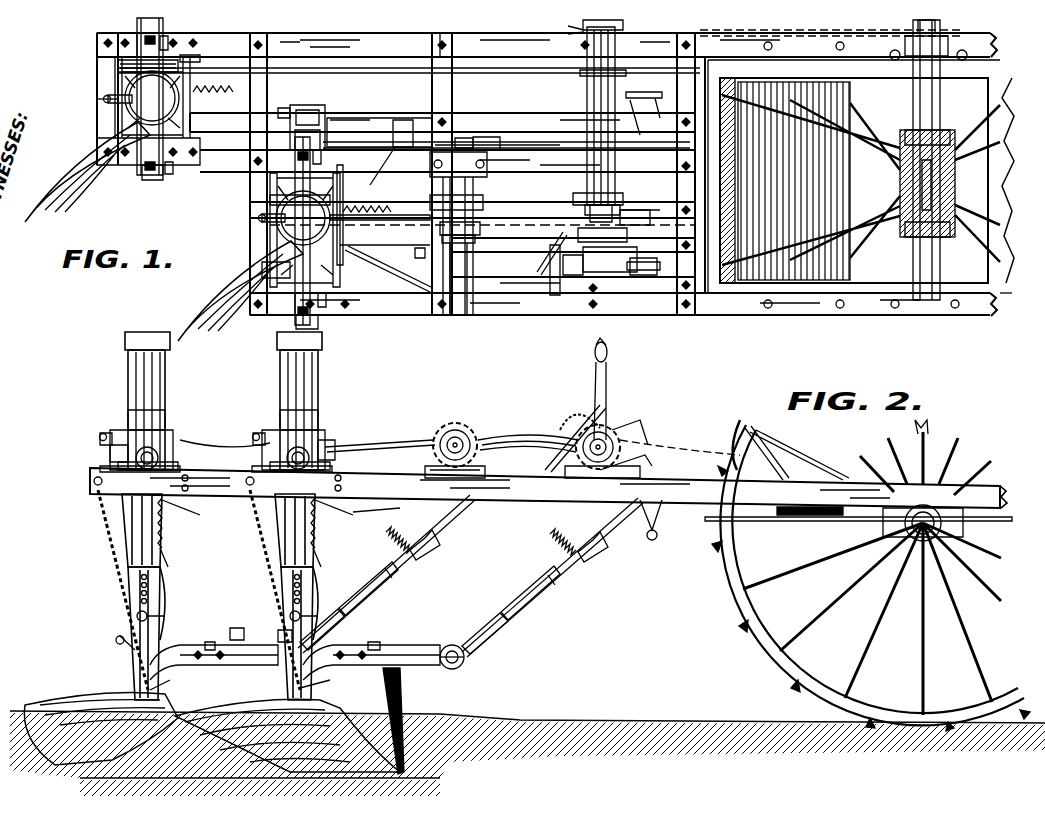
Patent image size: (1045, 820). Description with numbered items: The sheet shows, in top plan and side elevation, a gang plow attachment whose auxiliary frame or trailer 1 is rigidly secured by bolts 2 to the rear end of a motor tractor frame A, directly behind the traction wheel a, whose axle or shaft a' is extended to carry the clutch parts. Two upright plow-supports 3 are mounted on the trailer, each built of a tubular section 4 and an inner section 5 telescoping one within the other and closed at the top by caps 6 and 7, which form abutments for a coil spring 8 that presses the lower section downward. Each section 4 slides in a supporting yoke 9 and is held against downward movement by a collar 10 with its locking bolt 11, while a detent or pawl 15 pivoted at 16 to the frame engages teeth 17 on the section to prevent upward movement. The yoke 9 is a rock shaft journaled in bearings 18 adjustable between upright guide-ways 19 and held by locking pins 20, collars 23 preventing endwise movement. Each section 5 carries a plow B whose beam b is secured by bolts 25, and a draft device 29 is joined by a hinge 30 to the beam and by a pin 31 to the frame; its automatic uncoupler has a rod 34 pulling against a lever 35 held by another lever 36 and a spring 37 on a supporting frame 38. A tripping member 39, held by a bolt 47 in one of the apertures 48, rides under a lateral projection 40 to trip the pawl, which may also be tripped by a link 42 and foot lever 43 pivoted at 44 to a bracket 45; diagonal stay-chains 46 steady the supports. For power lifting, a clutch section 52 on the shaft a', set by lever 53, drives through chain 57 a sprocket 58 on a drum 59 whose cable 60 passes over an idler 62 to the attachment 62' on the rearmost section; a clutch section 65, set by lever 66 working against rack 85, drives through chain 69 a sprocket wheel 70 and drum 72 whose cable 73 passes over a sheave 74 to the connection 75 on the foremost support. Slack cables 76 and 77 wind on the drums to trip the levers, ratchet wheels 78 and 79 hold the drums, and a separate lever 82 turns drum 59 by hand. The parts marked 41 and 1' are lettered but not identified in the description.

In FIG. 1, the auxiliary frame or trailer 1 is at (547, 186).
In FIG. 2, the auxiliary frame or trailer 1 is at (548, 493).
In FIG. 1, the frame rail 1' is at (469, 37).
In FIG. 1, the bolts 2 is at (835, 49).
In FIG. 2, the bolts 2 is at (830, 478).
In FIG. 1, the upright plow-support 3 is at (722, 222).
In FIG. 2, the upright plow-support 3 is at (137, 547).
In FIG. 1, the upper tubular section 4 is at (612, 27).
In FIG. 2, the upper tubular section 4 is at (166, 366).
In FIG. 1, the inner lower section 5 is at (462, 140).
In FIG. 2, the inner lower section 5 is at (135, 650).
In FIG. 1, the cap 6 is at (135, 107).
In FIG. 2, the cap 6 is at (125, 341).
In FIG. 1, the cap 7 is at (945, 35).
In FIG. 1, the coil spring 8 is at (148, 22).
In FIG. 1, the supporting yoke 9 is at (140, 142).
In FIG. 2, the supporting yoke 9 is at (150, 470).
In FIG. 1, the collar 10 is at (125, 85).
In FIG. 2, the collar 10 is at (118, 430).
In FIG. 1, the locking bolt 11 is at (104, 99).
In FIG. 2, the locking bolt 11 is at (102, 436).
In FIG. 1, the detent or pawl 15 is at (227, 158).
In FIG. 2, the detent or pawl 15 is at (185, 506).
In FIG. 1, the pivot 16 is at (190, 55).
In FIG. 2, the pivot 16 is at (187, 482).
In FIG. 2, the teeth 17 is at (164, 542).
In FIG. 1, the bearings 18 is at (145, 38).
In FIG. 2, the bearings 18 is at (160, 452).
In FIG. 1, the upright guide-ways 19 is at (167, 38).
In FIG. 2, the upright guide-ways 19 is at (160, 415).
In FIG. 1, the locking pins 20 is at (118, 42).
In FIG. 2, the locking pins 20 is at (110, 452).
In FIG. 1, the collars 23 is at (160, 180).
In FIG. 2, the collars 23 is at (95, 481).
In FIG. 2, the bolts 25 is at (135, 690).
In FIG. 1, the draft device 29 is at (400, 140).
In FIG. 2, the draft device 29 is at (418, 562).
In FIG. 1, the hinge 30 is at (305, 105).
In FIG. 2, the hinge 30 is at (465, 660).
In FIG. 1, the pin 31 is at (500, 137).
In FIG. 1, the rod 34 is at (468, 138).
In FIG. 2, the rod 34 is at (432, 536).
In FIG. 2, the lever 35 is at (490, 640).
In FIG. 2, the lever 36 is at (365, 606).
In FIG. 2, the spring 37 is at (380, 568).
In FIG. 2, the supporting frame 38 is at (378, 590).
In FIG. 2, the tripping member 39 is at (168, 580).
In FIG. 2, the lateral projection 40 is at (164, 513).
In FIG. 1, the rack 41 is at (210, 92).
In FIG. 1, the link 42 is at (360, 118).
In FIG. 2, the link 42 is at (385, 508).
In FIG. 1, the foot lever 43 is at (636, 112).
In FIG. 2, the foot lever 43 is at (632, 458).
In FIG. 2, the pivot 44 is at (650, 532).
In FIG. 2, the bracket 45 is at (651, 515).
In FIG. 1, the diagonal stay-chains 46 is at (275, 270).
In FIG. 2, the diagonal stay-chains 46 is at (105, 531).
In FIG. 2, the bolt 47 is at (150, 616).
In FIG. 2, the apertures 48 is at (138, 590).
In FIG. 1, the clutch section 52 is at (950, 33).
In FIG. 1, the lever 53 is at (945, 58).
In FIG. 2, the lever 53 is at (930, 450).
In FIG. 1, the chain 57 is at (830, 33).
In FIG. 2, the chain 57 is at (735, 442).
In FIG. 1, the sprocket 58 is at (584, 30).
In FIG. 1, the drum 59 is at (622, 90).
In FIG. 2, the drum 59 is at (606, 430).
In FIG. 1, the cable 60 is at (490, 140).
In FIG. 2, the cable 60 is at (205, 441).
In FIG. 1, the idler 62 is at (119, 67).
In FIG. 2, the attachment point 62' is at (112, 634).
In FIG. 1, the clutch section 65 is at (540, 272).
In FIG. 2, the clutch section 65 is at (637, 428).
In FIG. 2, the lever 66 is at (607, 366).
In FIG. 1, the chain 69 is at (550, 250).
In FIG. 2, the chain 69 is at (520, 420).
In FIG. 1, the sprocket wheel 70 is at (478, 235).
In FIG. 2, the sprocket wheel 70 is at (446, 430).
In FIG. 1, the drum 72 is at (487, 178).
In FIG. 2, the drum 72 is at (458, 428).
In FIG. 1, the cable 73 is at (380, 180).
In FIG. 2, the cable 73 is at (400, 428).
In FIG. 1, the sheave 74 is at (275, 200).
In FIG. 2, the connection point 75 is at (280, 635).
In FIG. 1, the cable 76 is at (870, 33).
In FIG. 2, the cable 76 is at (798, 518).
In FIG. 2, the cable 77 is at (548, 456).
In FIG. 1, the ratchet wheel 78 is at (620, 205).
In FIG. 1, the ratchet wheel 79 is at (483, 205).
In FIG. 1, the lever 82 is at (585, 195).
In FIG. 1, the rack 85 is at (656, 110).
In FIG. 2, the rack 85 is at (570, 425).
In FIG. 1, the traction wheel a is at (871, 202).
In FIG. 2, the traction wheel a is at (871, 578).
In FIG. 1, the axle or shaft a' is at (934, 168).
In FIG. 2, the axle or shaft a' is at (858, 523).
In FIG. 1, the motor tractor frame A is at (977, 322).
In FIG. 2, the motor tractor frame A is at (996, 490).
In FIG. 1, the plow B is at (55, 185).
In FIG. 2, the plow B is at (165, 680).
In FIG. 1, the plow beam b is at (282, 108).
In FIG. 2, the plow beam b is at (210, 648).